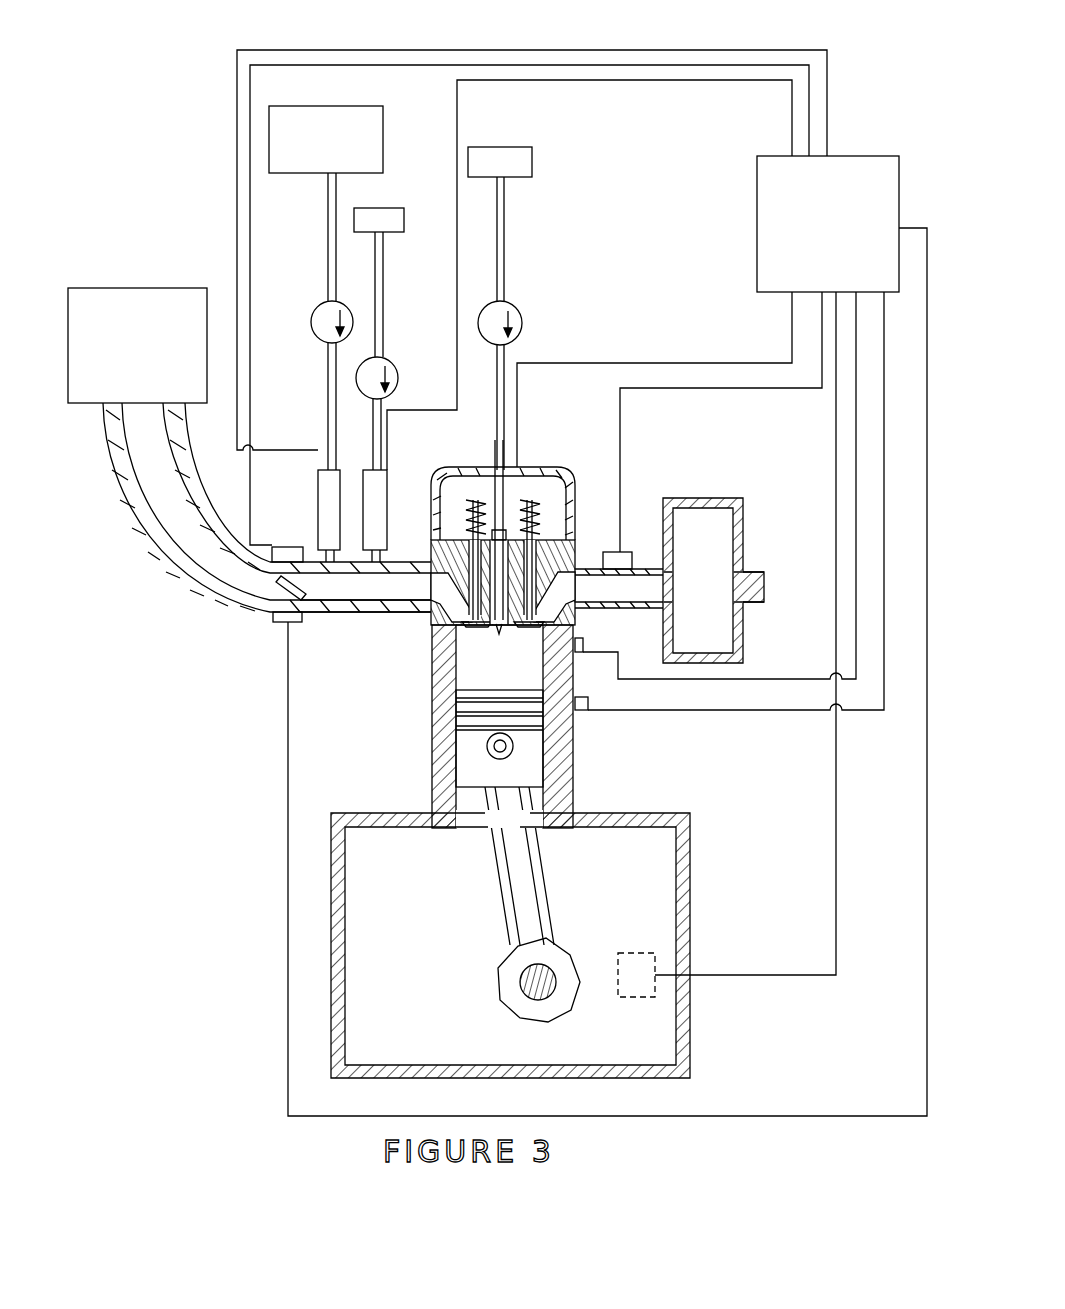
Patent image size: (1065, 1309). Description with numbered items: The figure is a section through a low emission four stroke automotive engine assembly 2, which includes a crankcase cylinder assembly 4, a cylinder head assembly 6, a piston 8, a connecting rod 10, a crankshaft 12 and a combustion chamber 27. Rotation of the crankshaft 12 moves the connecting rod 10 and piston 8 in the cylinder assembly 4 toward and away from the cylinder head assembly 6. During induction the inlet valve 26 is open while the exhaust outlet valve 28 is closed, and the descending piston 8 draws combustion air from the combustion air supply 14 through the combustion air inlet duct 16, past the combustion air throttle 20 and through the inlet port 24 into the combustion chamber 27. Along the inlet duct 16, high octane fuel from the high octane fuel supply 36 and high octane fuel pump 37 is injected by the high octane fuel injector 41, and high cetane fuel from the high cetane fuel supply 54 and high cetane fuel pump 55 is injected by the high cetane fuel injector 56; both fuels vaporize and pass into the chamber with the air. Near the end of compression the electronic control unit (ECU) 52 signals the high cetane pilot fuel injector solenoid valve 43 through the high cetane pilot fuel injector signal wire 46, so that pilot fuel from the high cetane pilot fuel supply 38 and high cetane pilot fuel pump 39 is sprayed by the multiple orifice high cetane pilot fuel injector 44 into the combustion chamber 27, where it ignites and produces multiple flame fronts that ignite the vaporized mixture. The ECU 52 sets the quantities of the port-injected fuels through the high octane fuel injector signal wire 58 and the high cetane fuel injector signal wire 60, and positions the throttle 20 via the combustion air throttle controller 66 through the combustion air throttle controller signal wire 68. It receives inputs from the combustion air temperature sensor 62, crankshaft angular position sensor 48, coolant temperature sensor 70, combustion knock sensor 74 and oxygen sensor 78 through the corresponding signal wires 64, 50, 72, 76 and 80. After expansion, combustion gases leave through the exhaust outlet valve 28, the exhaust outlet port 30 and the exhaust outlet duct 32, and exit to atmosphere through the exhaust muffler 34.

The engine assembly 2 is at (165, 1028).
The crankcase/cylinder assembly 4 is at (331, 895).
The cylinder head assembly 6 is at (575, 541).
The piston 8 is at (545, 750).
The connecting rod 10 is at (538, 870).
The crankshaft 12 is at (556, 970).
The combustion air supply 14 is at (178, 286).
The combustion air inlet duct 16 is at (110, 470).
The combustion air throttle 20 is at (320, 613).
The inlet port 24 is at (432, 613).
The inlet valve 26 is at (478, 628).
The combustion chamber 27 is at (444, 690).
The exhaust outlet valve 28 is at (532, 628).
The exhaust outlet port 30 is at (570, 612).
The exhaust outlet duct 32 is at (610, 609).
The exhaust muffler 34 is at (743, 500).
The high octane fuel supply 36 is at (383, 122).
The high octane fuel pump 37 is at (312, 304).
The high cetane pilot fuel supply 38 is at (532, 160).
The high cetane pilot fuel pump 39 is at (522, 312).
The high octane fuel injector 41 is at (318, 498).
The high cetane pilot fuel injector solenoid valve 43 is at (490, 522).
The multiple orifice high cetane pilot fuel injector 44 is at (499, 656).
The high cetane pilot fuel injector signal wire 46 is at (615, 363).
The crankshaft angular position sensor 48 is at (618, 998).
The crankshaft angular position sensor signal wire 50 is at (775, 976).
The electronic control unit (ECU) 52 is at (870, 156).
The high cetane fuel supply 54 is at (404, 222).
The high cetane fuel pump 55 is at (398, 378).
The high cetane fuel injector 56 is at (387, 474).
The high octane fuel injector signal wire 58 is at (655, 46).
The high cetane fuel injector signal wire 60 is at (624, 84).
The combustion air temperature sensor 62 is at (286, 546).
The combustion air temperature sensor signal wire 64 is at (305, 70).
The combustion air throttle controller 66 is at (290, 602).
The combustion air throttle controller signal wire 68 is at (288, 684).
The coolant temperature sensor 70 is at (590, 714).
The coolant temperature sensor signal wire 72 is at (710, 711).
The combustion knock sensor 74 is at (584, 655).
The combustion knock sensor signal wire 76 is at (760, 679).
The oxygen sensor 78 is at (620, 552).
The oxygen sensor signal wire 80 is at (730, 390).